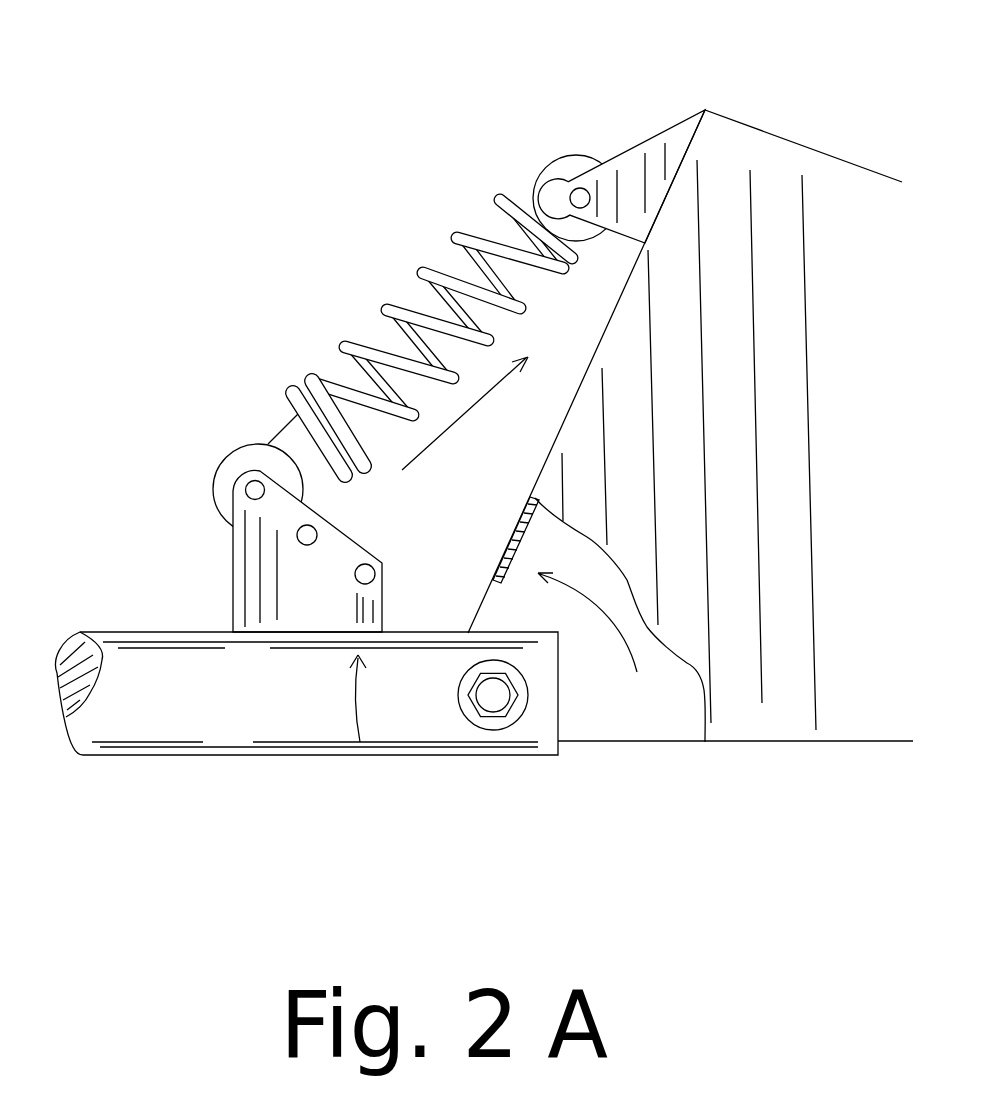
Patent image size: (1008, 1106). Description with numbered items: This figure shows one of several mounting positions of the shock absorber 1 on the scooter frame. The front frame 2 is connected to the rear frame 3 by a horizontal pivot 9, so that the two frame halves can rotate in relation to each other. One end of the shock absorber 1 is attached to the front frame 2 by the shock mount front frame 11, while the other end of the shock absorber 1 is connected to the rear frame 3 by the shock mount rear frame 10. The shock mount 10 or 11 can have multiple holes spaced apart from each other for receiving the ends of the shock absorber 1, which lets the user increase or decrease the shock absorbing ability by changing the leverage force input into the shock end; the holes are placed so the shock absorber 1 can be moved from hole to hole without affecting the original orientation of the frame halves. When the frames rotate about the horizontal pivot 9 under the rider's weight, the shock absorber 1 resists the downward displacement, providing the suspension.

The shock absorber 1 is at (370, 315).
The front frame 2 is at (115, 768).
The rear frame 3 is at (733, 753).
The horizontal pivot 9 is at (480, 723).
The shock mount rear frame 10 is at (645, 132).
The shock mount front frame 11 is at (393, 578).